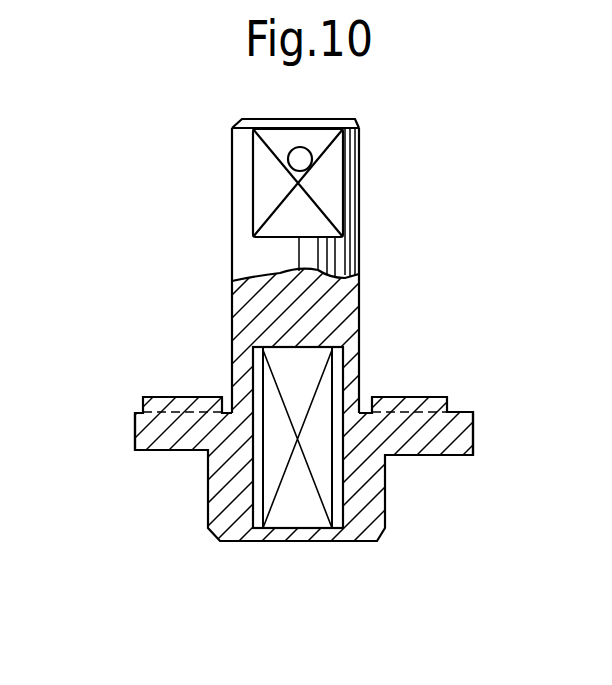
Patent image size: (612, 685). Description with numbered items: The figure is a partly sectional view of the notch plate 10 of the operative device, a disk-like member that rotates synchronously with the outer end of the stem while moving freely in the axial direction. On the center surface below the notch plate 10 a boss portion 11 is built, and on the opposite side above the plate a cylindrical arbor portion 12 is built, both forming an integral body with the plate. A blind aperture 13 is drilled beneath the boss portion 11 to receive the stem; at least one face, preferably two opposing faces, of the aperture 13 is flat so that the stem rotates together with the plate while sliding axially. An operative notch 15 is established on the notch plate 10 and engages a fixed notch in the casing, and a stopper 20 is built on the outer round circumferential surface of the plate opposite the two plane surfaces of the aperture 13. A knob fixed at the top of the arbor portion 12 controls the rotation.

The notch plate 10 is at (430, 445).
The boss portion 11 is at (372, 508).
The cylindrical arbor portion 12 is at (356, 291).
The blind aperture 13 is at (340, 487).
The operative notch 15 is at (170, 396).
The stopper 20 is at (135, 433).